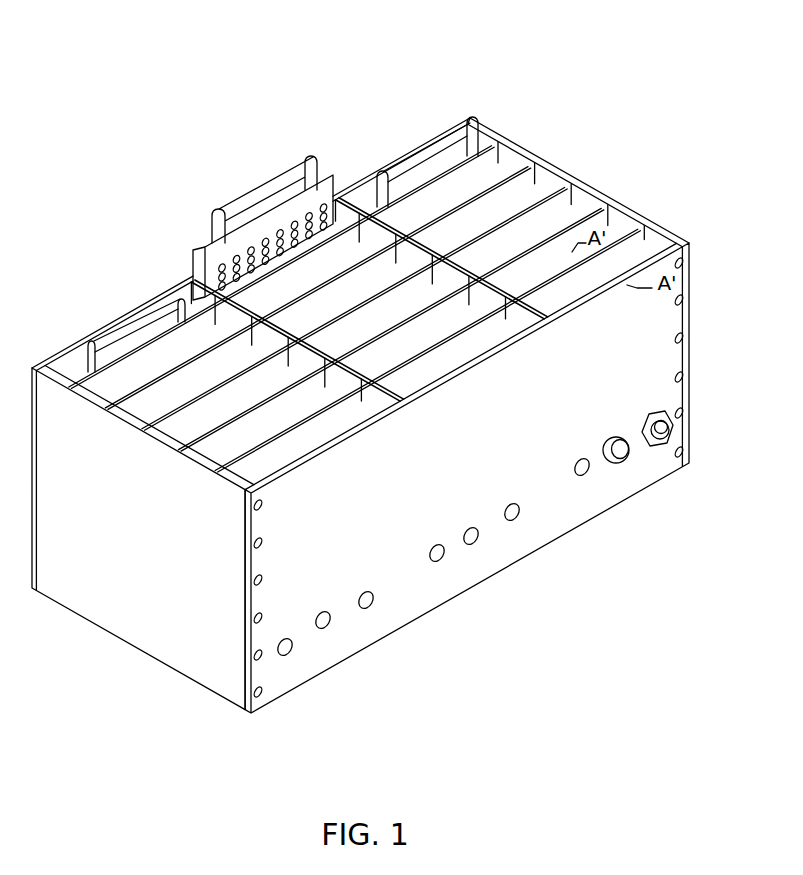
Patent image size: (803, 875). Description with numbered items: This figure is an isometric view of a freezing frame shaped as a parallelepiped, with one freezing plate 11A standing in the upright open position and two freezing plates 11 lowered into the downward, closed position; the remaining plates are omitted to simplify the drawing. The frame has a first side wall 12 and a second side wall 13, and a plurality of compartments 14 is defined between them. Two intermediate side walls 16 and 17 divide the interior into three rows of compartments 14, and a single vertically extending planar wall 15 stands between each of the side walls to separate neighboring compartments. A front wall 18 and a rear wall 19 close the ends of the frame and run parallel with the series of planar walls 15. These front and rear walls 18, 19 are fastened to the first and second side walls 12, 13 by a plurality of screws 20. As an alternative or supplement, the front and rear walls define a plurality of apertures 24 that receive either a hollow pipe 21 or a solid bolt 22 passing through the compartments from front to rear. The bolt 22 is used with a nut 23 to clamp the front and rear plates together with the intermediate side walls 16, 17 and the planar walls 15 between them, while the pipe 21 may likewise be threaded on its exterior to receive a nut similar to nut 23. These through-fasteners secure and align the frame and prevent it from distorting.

The freezing plate 11 is at (106, 352).
The freezing plate 11A is at (204, 245).
The first side wall 12 is at (113, 537).
The second side wall 13 is at (567, 169).
The compartment 14 is at (66, 362).
The vertically extending planar wall 15 is at (143, 367).
The intermediate side wall 16 is at (378, 398).
The intermediate side wall 17 is at (530, 318).
The front wall 18 is at (450, 482).
The rear wall 19 is at (470, 124).
The screw 20 is at (254, 693).
The pipe 21 is at (585, 478).
The bolt 22 is at (658, 447).
The nut 23 is at (619, 464).
The aperture 24 is at (365, 611).